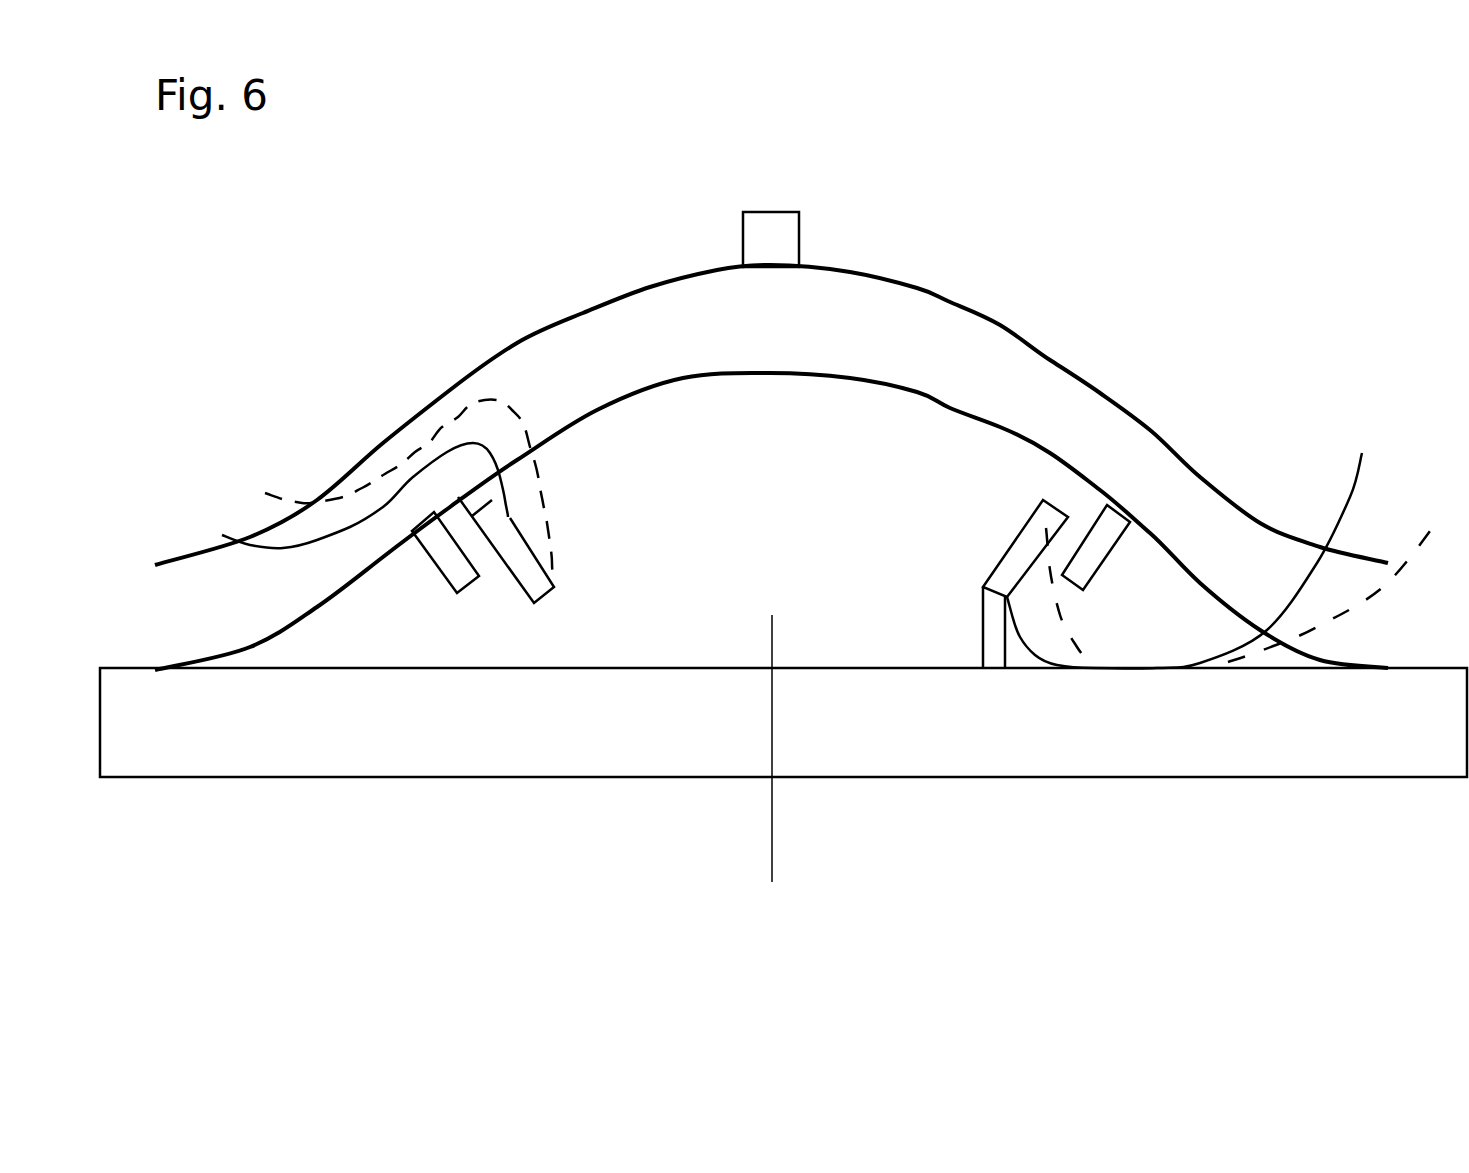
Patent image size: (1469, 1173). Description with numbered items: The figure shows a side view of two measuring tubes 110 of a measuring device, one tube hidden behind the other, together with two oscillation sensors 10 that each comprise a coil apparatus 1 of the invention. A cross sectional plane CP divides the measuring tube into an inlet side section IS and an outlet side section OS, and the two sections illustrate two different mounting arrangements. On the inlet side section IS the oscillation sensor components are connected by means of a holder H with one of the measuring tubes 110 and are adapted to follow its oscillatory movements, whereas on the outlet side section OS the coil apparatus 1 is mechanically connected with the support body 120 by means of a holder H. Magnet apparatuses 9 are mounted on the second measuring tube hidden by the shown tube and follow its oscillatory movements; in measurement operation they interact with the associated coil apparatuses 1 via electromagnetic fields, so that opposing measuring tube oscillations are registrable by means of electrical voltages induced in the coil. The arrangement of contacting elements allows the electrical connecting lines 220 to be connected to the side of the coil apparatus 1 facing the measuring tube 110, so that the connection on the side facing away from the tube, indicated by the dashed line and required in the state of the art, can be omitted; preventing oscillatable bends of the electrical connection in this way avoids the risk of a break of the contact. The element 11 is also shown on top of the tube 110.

The coil apparatus 1 is at (553, 582).
The magnet apparatus 9 is at (450, 575).
The oscillation sensor 10 is at (505, 640).
The top block 11 is at (825, 213).
The measuring tube 110 is at (1205, 410).
The support body 120 is at (960, 720).
The electrical connecting line 220 is at (288, 535).
The holder H is at (478, 495).
The cross sectional plane CP is at (774, 781).
The inlet side section IS is at (695, 845).
The outlet side section OS is at (850, 845).